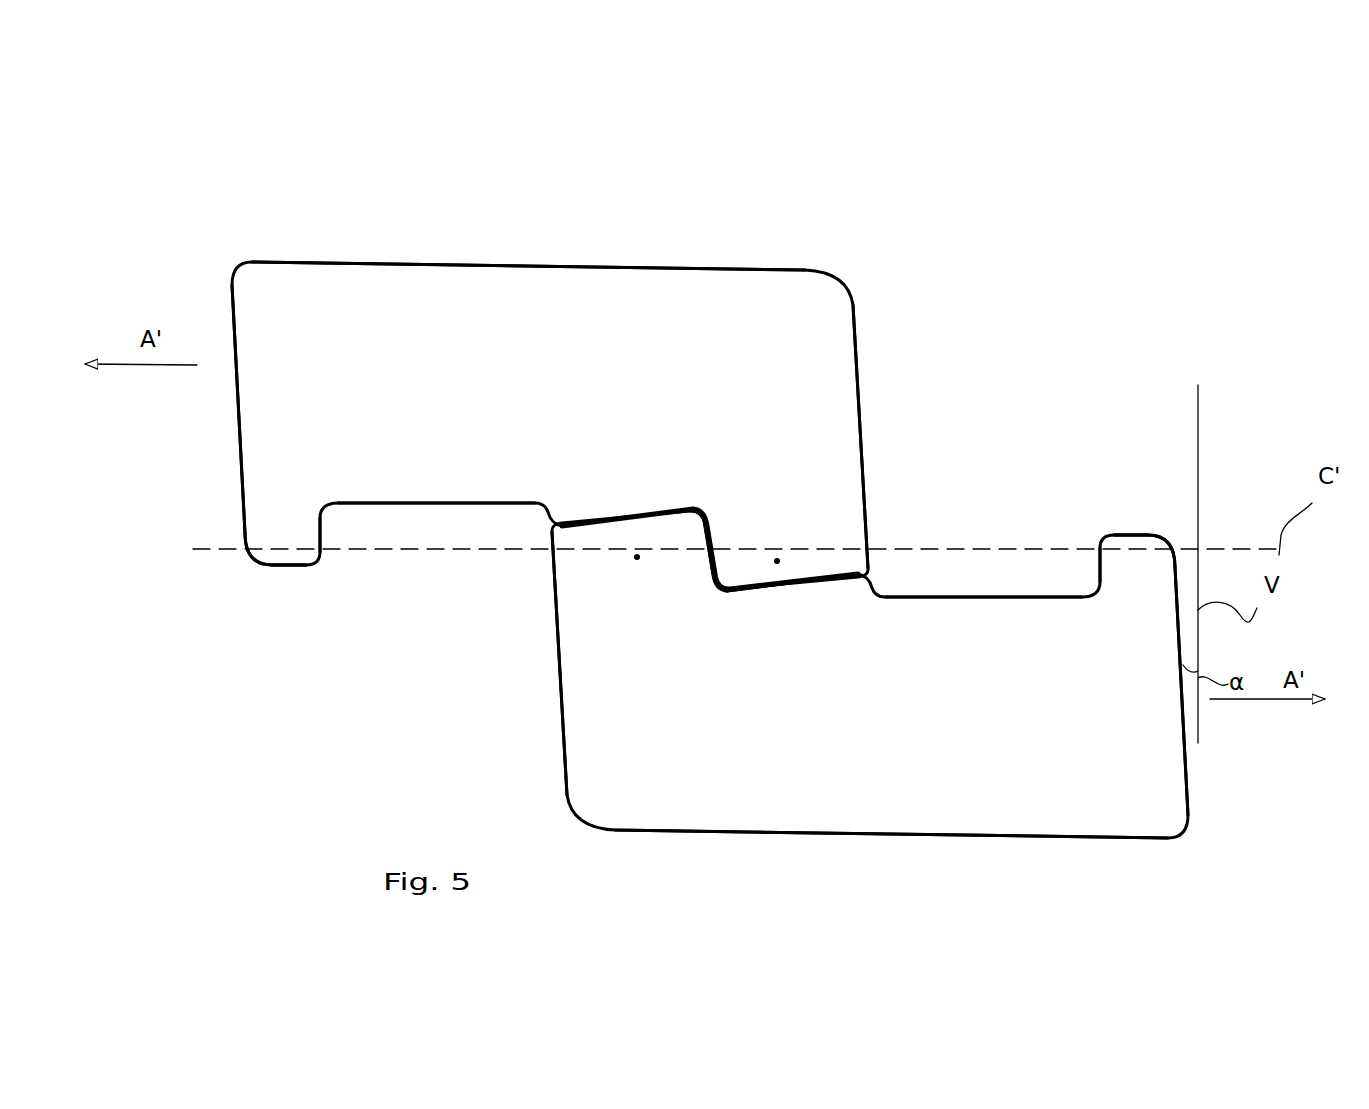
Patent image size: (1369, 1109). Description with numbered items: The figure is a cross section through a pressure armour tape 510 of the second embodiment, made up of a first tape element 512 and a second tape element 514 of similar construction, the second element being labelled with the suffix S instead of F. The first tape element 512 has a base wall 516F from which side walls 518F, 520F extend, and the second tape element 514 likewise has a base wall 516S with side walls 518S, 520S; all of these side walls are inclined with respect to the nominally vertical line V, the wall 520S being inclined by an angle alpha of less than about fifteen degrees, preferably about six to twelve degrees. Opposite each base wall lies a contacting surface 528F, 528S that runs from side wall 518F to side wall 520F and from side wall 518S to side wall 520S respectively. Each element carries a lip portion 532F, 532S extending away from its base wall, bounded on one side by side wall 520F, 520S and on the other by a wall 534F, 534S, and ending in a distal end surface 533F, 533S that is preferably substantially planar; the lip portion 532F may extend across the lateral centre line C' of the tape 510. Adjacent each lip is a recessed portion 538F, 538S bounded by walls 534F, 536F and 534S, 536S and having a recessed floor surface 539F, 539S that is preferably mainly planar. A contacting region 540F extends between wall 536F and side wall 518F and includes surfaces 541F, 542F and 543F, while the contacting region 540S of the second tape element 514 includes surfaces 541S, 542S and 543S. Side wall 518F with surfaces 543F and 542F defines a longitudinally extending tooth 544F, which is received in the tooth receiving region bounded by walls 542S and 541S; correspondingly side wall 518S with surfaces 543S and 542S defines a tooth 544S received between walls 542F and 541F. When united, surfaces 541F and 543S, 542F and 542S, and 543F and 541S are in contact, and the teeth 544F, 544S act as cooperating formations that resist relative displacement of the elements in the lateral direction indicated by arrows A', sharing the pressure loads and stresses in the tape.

The tape 510 is at (1057, 271).
The first tape element 512 is at (568, 290).
The second tape element 514 is at (945, 797).
The base wall 516F is at (450, 264).
The base wall 516S is at (777, 833).
The side wall 518F is at (868, 420).
The side wall 518S is at (565, 766).
The side wall 520F is at (237, 405).
The side wall 520S is at (1190, 766).
The contacting surface 528F is at (373, 565).
The contacting surface 528S is at (987, 562).
The lip portion 532F is at (277, 548).
The lip portion 532S is at (1165, 545).
The end surface 533F is at (272, 567).
The end surface 533S is at (1135, 537).
The wall 534F is at (328, 538).
The wall 534S is at (1100, 565).
The wall 536F is at (543, 517).
The wall 536S is at (876, 594).
The recessed portion 538F is at (431, 525).
The recessed portion 538S is at (1040, 586).
The recessed floor surface 539F is at (462, 503).
The recessed floor surface 539S is at (953, 597).
The contacting region 540F is at (666, 496).
The contacting region 540S is at (730, 621).
The surface 541F is at (611, 518).
The surface 541S is at (800, 587).
The surface 542F is at (720, 562).
The surface 542S is at (706, 554).
The surface 543F is at (815, 576).
The surface 543S is at (598, 527).
The longitudinally extending tooth 544F is at (777, 561).
The longitudinally extending tooth 544S is at (637, 557).